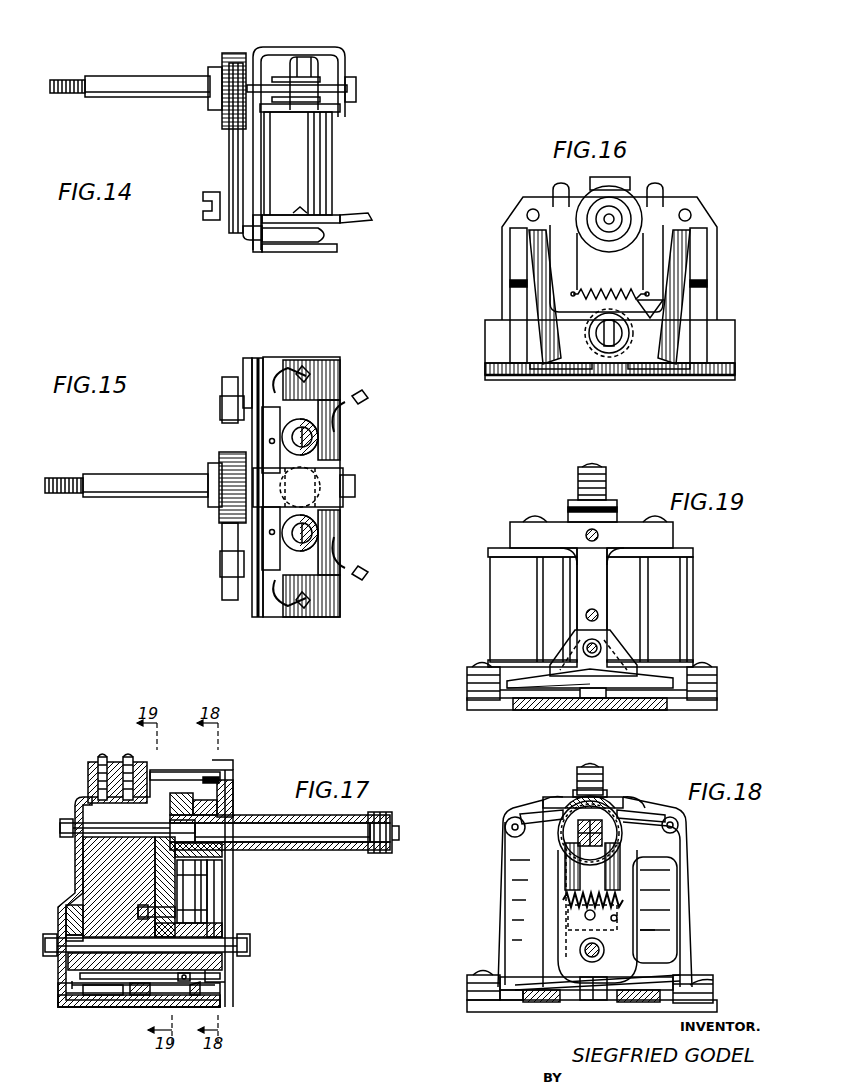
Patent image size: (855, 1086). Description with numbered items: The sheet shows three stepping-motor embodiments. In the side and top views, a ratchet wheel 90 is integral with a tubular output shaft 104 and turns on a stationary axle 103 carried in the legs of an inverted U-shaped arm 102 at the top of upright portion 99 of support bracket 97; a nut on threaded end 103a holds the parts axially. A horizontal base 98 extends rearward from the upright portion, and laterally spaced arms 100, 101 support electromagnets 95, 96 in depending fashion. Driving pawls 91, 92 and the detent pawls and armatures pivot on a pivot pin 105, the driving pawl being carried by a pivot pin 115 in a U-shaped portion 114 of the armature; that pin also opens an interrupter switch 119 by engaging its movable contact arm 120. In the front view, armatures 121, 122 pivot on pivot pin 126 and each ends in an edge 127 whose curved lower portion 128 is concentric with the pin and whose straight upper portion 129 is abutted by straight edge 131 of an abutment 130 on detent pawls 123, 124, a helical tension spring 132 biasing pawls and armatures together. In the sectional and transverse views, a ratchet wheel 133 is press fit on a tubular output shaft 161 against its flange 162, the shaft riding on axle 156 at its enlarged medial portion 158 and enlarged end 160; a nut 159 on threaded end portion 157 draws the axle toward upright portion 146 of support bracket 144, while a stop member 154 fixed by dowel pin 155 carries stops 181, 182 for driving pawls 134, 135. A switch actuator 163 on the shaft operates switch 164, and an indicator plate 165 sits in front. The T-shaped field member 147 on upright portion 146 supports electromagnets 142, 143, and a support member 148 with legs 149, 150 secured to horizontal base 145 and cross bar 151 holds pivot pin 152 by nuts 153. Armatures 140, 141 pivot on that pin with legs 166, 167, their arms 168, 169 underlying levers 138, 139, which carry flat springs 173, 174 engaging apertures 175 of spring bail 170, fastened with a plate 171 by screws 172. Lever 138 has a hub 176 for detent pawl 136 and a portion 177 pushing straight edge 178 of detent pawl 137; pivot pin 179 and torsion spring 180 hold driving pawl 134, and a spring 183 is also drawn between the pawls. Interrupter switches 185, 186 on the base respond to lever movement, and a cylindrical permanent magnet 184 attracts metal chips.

In FIG. 14, the ratchet wheel 90 is at (233, 57).
In FIG. 15, the ratchet wheel 90 is at (224, 459).
In FIG. 15, the driving pawl 91 is at (231, 386).
In FIG. 14, the driving pawl 92 is at (231, 156).
In FIG. 15, the driving pawl 92 is at (234, 590).
In FIG. 15, the electromagnet 95 is at (338, 455).
In FIG. 14, the electromagnet 96 is at (283, 166).
In FIG. 15, the electromagnet 96 is at (337, 526).
In FIG. 14, the support bracket 97 is at (252, 251).
In FIG. 15, the support bracket 97 is at (268, 620).
In FIG. 14, the horizontal base 98 is at (297, 253).
In FIG. 15, the horizontal base 98 is at (290, 612).
In FIG. 14, the upright portion 99 is at (244, 237).
In FIG. 15, the upright portion 99 is at (255, 605).
In FIG. 15, the arm 100 is at (326, 430).
In FIG. 14, the arm 101 is at (323, 96).
In FIG. 15, the arm 101 is at (340, 566).
In FIG. 14, the inverted U-shaped arm 102 is at (344, 60).
In FIG. 15, the inverted U-shaped arm 102 is at (331, 485).
In FIG. 14, the stationary shaft or axle 103 is at (357, 88).
In FIG. 14, the threaded end 103a is at (70, 97).
In FIG. 15, the threaded end 103a is at (62, 497).
In FIG. 14, the tubular output shaft 104 is at (133, 77).
In FIG. 15, the tubular output shaft 104 is at (118, 477).
In FIG. 14, the pivot pin 105 is at (205, 214).
In FIG. 15, the U-shaped portion 114 is at (221, 406).
In FIG. 15, the pivot pin 115 is at (248, 406).
In FIG. 14, the interrupter switch 119 is at (276, 70).
In FIG. 15, the interrupter switch 119 is at (266, 441).
In FIG. 15, the movable contact arm 120 is at (268, 424).
In FIG. 16, the armature 121 is at (508, 269).
In FIG. 16, the armature 122 is at (703, 267).
In FIG. 16, the detent pawl 123 is at (665, 257).
In FIG. 16, the detent pawl 124 is at (547, 254).
In FIG. 16, the pivot pin 126 is at (600, 361).
In FIG. 16, the edge 127 is at (648, 366).
In FIG. 16, the lower portion 128 is at (613, 356).
In FIG. 16, the straight upper portion 129 is at (655, 311).
In FIG. 16, the abutment 130 is at (660, 324).
In FIG. 16, the straight edge 131 is at (715, 340).
In FIG. 16, the helical tension spring 132 is at (607, 291).
In FIG. 17, the ratchet wheel 133 is at (230, 790).
In FIG. 18, the ratchet wheel 133 is at (578, 820).
In FIG. 18, the driving pawl 134 is at (538, 812).
In FIG. 18, the driving pawl 135 is at (637, 810).
In FIG. 18, the detent pawl 136 is at (575, 875).
In FIG. 18, the detent pawl 137 is at (620, 878).
In FIG. 18, the lever 138 is at (495, 904).
In FIG. 18, the lever 139 is at (695, 904).
In FIG. 19, the armature 140 is at (568, 692).
In FIG. 19, the armature 141 is at (622, 693).
In FIG. 19, the electromagnet 142 is at (507, 614).
In FIG. 19, the electromagnet 143 is at (619, 616).
In FIG. 19, the support bracket 144 is at (722, 706).
In FIG. 17, the support bracket 144 is at (228, 1005).
In FIG. 19, the horizontal base 145 is at (697, 706).
In FIG. 17, the horizontal base 145 is at (117, 1007).
In FIG. 18, the horizontal base 145 is at (470, 1002).
In FIG. 17, the upright portion 146 is at (75, 866).
In FIG. 19, the T-shaped field member 147 is at (672, 539).
In FIG. 17, the T-shaped field member 147 is at (90, 846).
In FIG. 17, the support member 148 is at (190, 977).
In FIG. 18, the leg 149 is at (540, 1003).
In FIG. 17, the leg 150 is at (222, 990).
In FIG. 18, the leg 150 is at (640, 1003).
In FIG. 17, the transverse cross bar 151 is at (175, 912).
In FIG. 19, the pivot pin 152 is at (582, 645).
In FIG. 17, the pivot pin 152 is at (215, 966).
In FIG. 18, the pivot pin 152 is at (580, 948).
In FIG. 17, the nut 153 is at (225, 946).
In FIG. 17, the stop member 154 is at (155, 790).
In FIG. 18, the stop member 154 is at (600, 810).
In FIG. 19, the dowel pin 155 is at (598, 612).
In FIG. 17, the dowel pin 155 is at (225, 905).
In FIG. 19, the axle 156 is at (586, 536).
In FIG. 17, the axle 156 is at (302, 840).
In FIG. 17, the threaded end portion 157 is at (58, 828).
In FIG. 17, the enlarged medial portion 158 is at (225, 818).
In FIG. 17, the nut 159 is at (88, 800).
In FIG. 17, the end of enlarged diameter 160 is at (395, 833).
In FIG. 17, the tubular output shaft 161 is at (345, 851).
In FIG. 18, the tubular output shaft 161 is at (560, 850).
In FIG. 17, the flange 162 is at (190, 775).
In FIG. 17, the switch actuator 163 is at (207, 860).
In FIG. 19, the switch 164 is at (605, 500).
In FIG. 17, the switch 164 is at (220, 779).
In FIG. 18, the switch 164 is at (607, 790).
In FIG. 17, the indicator plate 165 is at (210, 893).
In FIG. 19, the leg 166 is at (558, 668).
In FIG. 17, the leg 166 is at (78, 918).
In FIG. 19, the leg 167 is at (620, 652).
In FIG. 17, the leg 167 is at (68, 925).
In FIG. 19, the arm 168 is at (520, 690).
In FIG. 18, the arm 168 is at (535, 980).
In FIG. 19, the arm 169 is at (668, 660).
In FIG. 18, the arm 169 is at (672, 978).
In FIG. 17, the spring bail 170 is at (75, 985).
In FIG. 18, the spring bail 170 is at (560, 985).
In FIG. 19, the insulator 171 is at (591, 706).
In FIG. 18, the insulator 171 is at (585, 1003).
In FIG. 17, the screw 172 is at (80, 1007).
In FIG. 18, the flat spring 173 is at (505, 1003).
In FIG. 18, the flat spring 174 is at (700, 1010).
In FIG. 17, the aperture 175 is at (160, 1000).
In FIG. 17, the hub 176 is at (240, 978).
In FIG. 18, the portion 177 is at (600, 912).
In FIG. 18, the straight edge 178 is at (615, 918).
In FIG. 18, the pivot pin 179 is at (508, 820).
In FIG. 18, the torsion spring 180 is at (505, 826).
In FIG. 18, the stop 181 is at (542, 815).
In FIG. 18, the stop 182 is at (640, 800).
In FIG. 18, the spring 183 is at (565, 905).
In FIG. 18, the cylindrical permanent magnet 184 is at (640, 936).
In FIG. 18, the interrupter switch 185 is at (480, 980).
In FIG. 18, the interrupter switch 186 is at (700, 985).